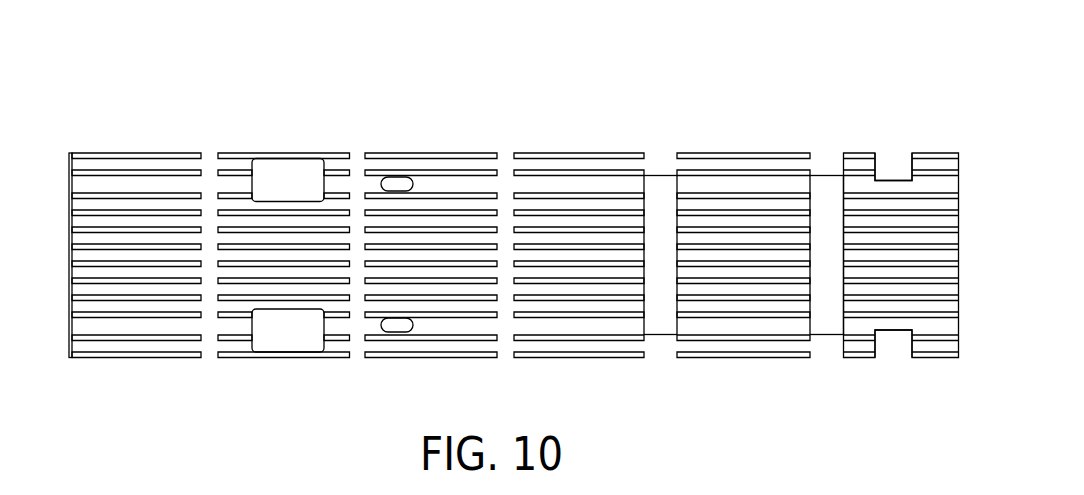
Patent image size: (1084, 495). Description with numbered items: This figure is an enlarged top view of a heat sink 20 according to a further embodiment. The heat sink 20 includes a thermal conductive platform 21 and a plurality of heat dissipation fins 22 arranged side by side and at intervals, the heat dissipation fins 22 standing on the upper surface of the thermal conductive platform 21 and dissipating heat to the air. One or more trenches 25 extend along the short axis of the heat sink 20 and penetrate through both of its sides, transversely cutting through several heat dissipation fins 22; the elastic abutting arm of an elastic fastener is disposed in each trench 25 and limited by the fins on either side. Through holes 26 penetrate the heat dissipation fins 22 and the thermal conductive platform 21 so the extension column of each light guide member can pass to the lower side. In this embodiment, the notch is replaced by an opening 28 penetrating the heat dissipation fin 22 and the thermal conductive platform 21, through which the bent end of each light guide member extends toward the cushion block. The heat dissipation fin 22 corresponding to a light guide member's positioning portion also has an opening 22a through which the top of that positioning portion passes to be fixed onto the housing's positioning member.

The heat sink 20 is at (64, 122).
The thermal conductive platform 21 is at (942, 166).
The heat dissipation fins 22 is at (125, 173).
The opening 22a is at (891, 160).
The trench 25 is at (661, 171).
The through hole 26 is at (395, 171).
The opening 28 is at (288, 170).